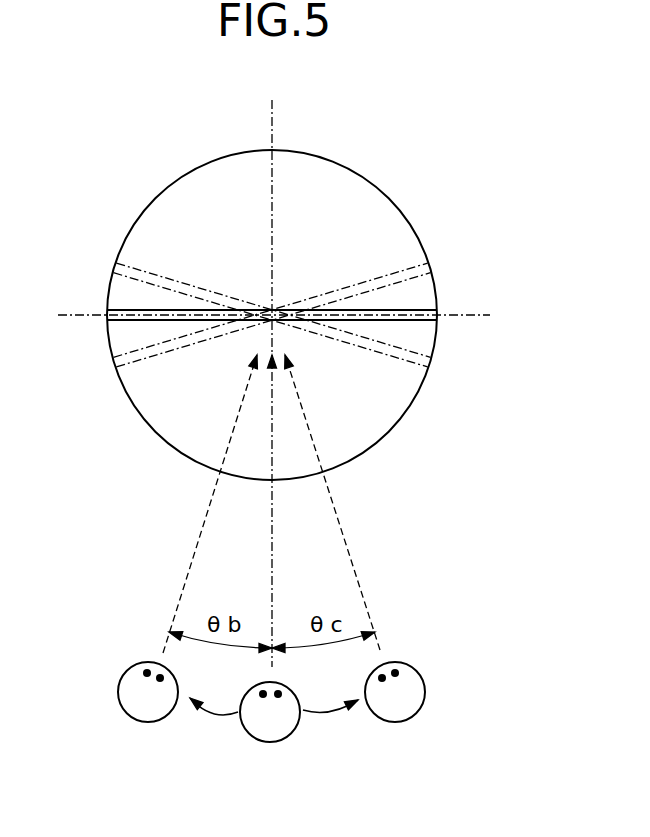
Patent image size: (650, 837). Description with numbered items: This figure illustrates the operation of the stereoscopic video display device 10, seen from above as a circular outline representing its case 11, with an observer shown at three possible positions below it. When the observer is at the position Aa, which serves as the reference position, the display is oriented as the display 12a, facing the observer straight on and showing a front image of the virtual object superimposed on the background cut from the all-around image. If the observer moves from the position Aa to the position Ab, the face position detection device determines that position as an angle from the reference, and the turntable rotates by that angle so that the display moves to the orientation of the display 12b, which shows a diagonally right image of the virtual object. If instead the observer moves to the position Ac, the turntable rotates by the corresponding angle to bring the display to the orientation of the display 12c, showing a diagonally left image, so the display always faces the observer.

The stereoscopic video display device 10 is at (393, 196).
The case 11 is at (177, 172).
The display 12a is at (416, 309).
The display 12b is at (393, 268).
The display 12c is at (150, 270).
The position Aa is at (268, 742).
The position Ab is at (141, 722).
The position Ac is at (400, 722).